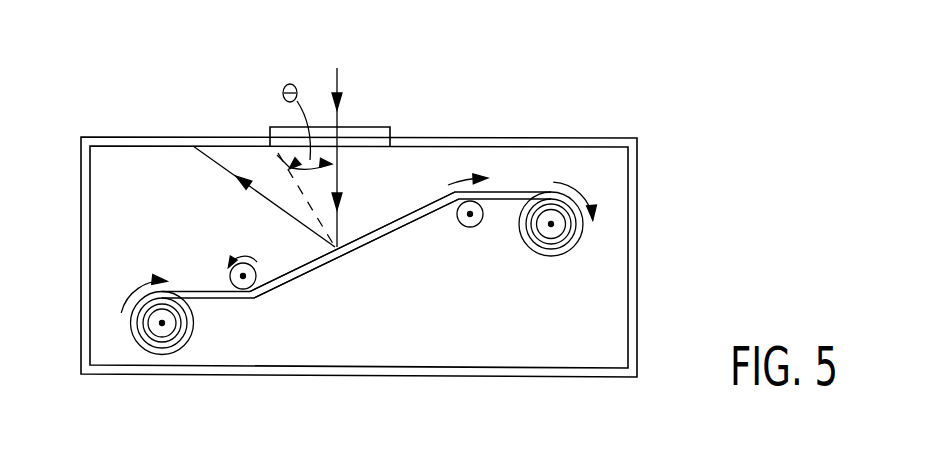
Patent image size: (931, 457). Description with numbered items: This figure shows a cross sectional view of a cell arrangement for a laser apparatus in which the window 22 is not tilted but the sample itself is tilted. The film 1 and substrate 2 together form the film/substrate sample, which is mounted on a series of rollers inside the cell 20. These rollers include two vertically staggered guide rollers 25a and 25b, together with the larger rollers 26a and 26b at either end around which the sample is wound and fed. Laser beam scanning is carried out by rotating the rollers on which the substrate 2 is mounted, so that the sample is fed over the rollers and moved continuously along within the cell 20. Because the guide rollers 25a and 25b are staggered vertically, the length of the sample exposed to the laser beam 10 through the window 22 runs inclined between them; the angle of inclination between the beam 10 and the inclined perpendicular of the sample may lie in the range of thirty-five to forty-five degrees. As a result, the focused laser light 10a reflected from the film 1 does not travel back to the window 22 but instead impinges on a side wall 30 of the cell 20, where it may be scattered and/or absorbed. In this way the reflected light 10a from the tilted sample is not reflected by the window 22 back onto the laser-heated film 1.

The film 1 is at (362, 246).
The substrate 2 is at (354, 245).
The laser beam 10 is at (338, 78).
The reflected laser light 10a is at (262, 195).
The cell 20 is at (584, 138).
The window 22 is at (368, 132).
The side wall 30 is at (113, 147).
The guide roller 25a is at (247, 289).
The guide roller 25b is at (470, 228).
The supply drum 26a is at (164, 343).
The take-up drum 26b is at (549, 240).